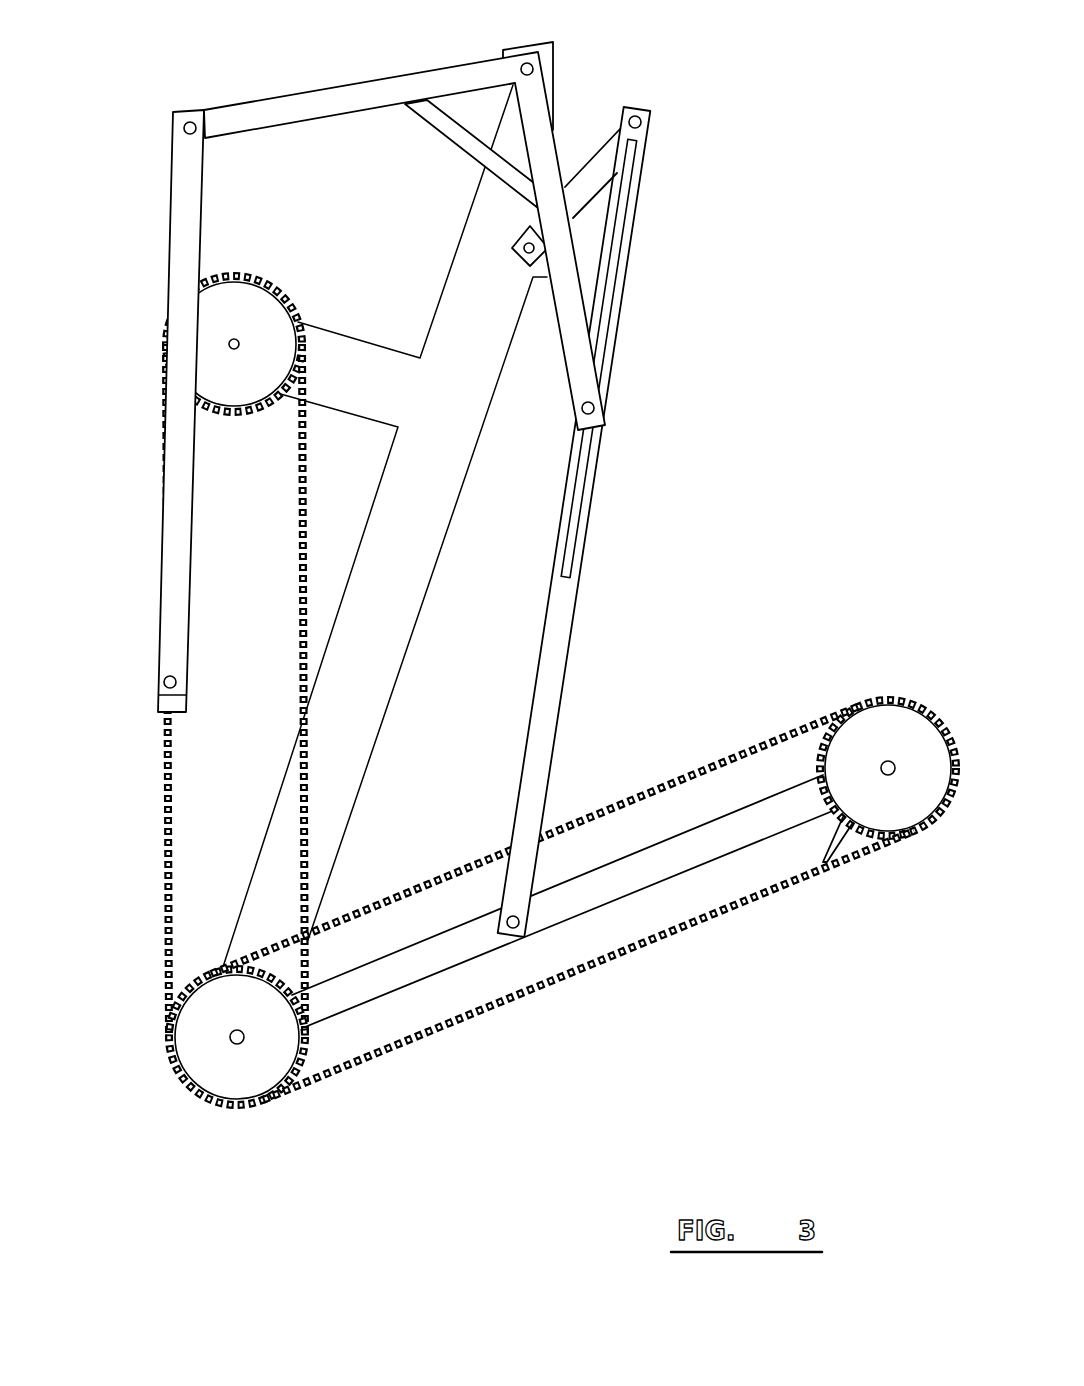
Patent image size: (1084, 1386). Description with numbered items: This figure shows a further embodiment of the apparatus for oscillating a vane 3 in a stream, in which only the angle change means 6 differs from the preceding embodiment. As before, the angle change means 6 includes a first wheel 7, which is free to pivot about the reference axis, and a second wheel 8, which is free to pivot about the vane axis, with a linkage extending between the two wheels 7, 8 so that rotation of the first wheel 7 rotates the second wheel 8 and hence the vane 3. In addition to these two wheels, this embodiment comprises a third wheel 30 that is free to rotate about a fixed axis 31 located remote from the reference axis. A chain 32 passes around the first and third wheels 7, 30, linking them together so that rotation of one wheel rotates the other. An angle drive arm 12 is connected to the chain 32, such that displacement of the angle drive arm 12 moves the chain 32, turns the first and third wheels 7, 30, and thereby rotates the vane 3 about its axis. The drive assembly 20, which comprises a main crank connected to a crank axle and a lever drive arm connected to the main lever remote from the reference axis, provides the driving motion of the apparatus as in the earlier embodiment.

The vane 3 is at (848, 837).
The angle change means 6 is at (225, 1058).
The first wheel 7 is at (239, 1094).
The second wheel 8 is at (890, 732).
The angle drive arm 12 is at (190, 248).
The drive assembly 20 is at (677, 123).
The third wheel 30 is at (188, 292).
The fixed axis 31 is at (228, 342).
The chain 32 is at (300, 538).